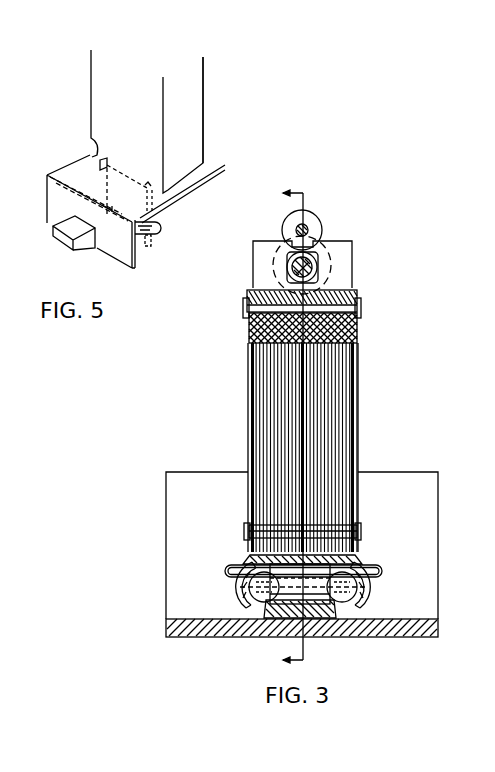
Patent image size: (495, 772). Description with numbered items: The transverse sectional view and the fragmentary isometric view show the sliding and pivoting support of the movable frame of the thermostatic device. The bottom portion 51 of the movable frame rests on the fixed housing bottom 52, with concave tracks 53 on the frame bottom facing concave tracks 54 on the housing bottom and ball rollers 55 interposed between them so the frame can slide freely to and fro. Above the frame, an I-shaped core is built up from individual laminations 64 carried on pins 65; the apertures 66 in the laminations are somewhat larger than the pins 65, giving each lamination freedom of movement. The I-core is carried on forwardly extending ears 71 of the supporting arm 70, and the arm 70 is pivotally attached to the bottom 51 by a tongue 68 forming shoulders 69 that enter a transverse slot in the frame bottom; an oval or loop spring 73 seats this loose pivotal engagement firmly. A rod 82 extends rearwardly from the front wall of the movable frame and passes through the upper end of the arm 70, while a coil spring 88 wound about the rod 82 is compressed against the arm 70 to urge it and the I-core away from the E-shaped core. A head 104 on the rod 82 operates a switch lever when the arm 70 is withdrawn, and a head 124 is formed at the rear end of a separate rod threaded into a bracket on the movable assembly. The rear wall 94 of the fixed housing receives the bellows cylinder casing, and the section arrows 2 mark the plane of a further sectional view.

In FIG. 3, the section line 2- 2 is at (280, 427).
In FIG. 3, the bottom portion 51 is at (357, 549).
In FIG. 3, the fixed housing bottom 52 is at (248, 634).
In FIG. 3, the concave tracks 53 is at (238, 585).
In FIG. 3, the concave tracks 54 is at (325, 606).
In FIG. 3, the ball rollers 55 is at (252, 589).
In FIG. 3, the laminations 64 is at (335, 398).
In FIG. 3, the pins 65 is at (358, 304).
In FIG. 3, the apertures 66 is at (262, 318).
In FIG. 5, the tongue 68 is at (162, 223).
In FIG. 5, the shoulders 69 is at (90, 138).
In FIG. 5, the supporting arm 70 is at (137, 113).
In FIG. 5, the forwardly extending ears 71 is at (205, 100).
In FIG. 3, the forwardly extending ears 71 is at (356, 370).
In FIG. 5, the oval or loop spring 73 is at (151, 242).
In FIG. 3, the oval or loop spring 73 is at (383, 571).
In FIG. 3, the rod 82 is at (322, 263).
In FIG. 3, the coil spring 88 is at (292, 268).
In FIG. 3, the rear wall 94 is at (217, 518).
In FIG. 3, the head 104 is at (330, 246).
In FIG. 3, the head 124 is at (312, 222).